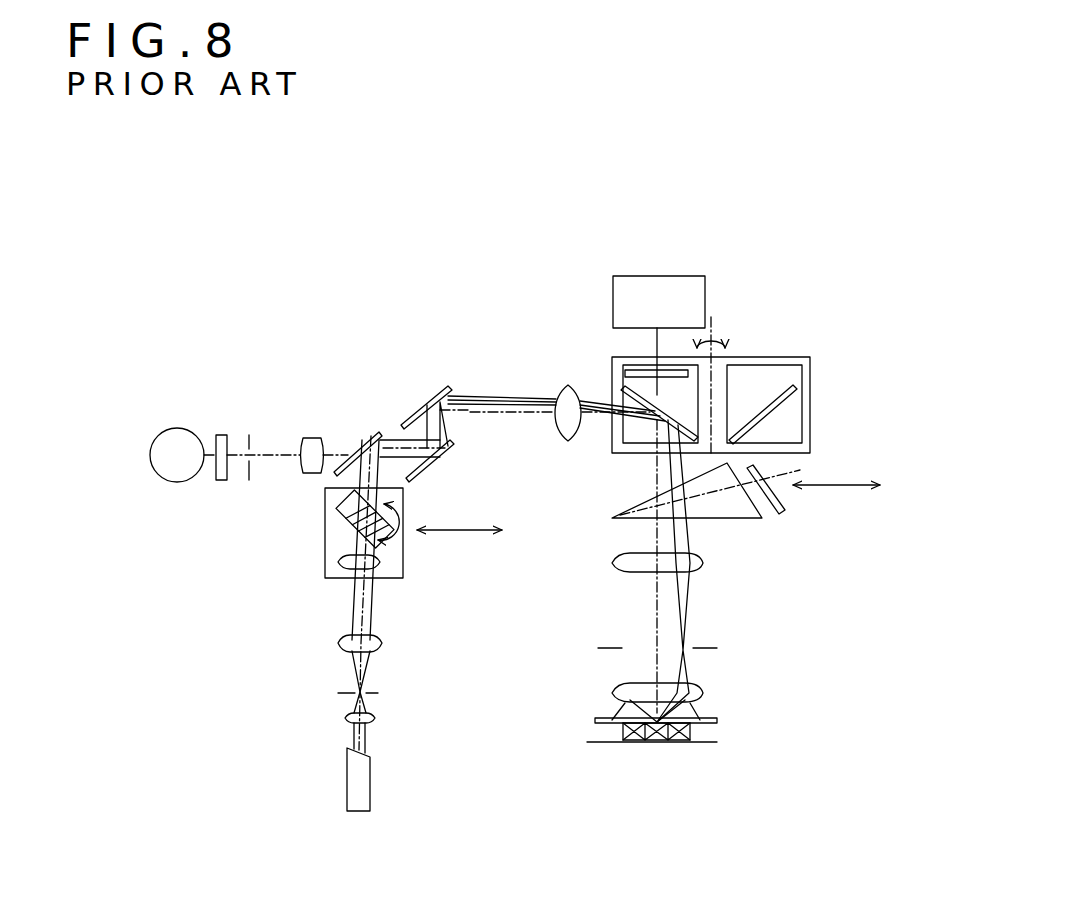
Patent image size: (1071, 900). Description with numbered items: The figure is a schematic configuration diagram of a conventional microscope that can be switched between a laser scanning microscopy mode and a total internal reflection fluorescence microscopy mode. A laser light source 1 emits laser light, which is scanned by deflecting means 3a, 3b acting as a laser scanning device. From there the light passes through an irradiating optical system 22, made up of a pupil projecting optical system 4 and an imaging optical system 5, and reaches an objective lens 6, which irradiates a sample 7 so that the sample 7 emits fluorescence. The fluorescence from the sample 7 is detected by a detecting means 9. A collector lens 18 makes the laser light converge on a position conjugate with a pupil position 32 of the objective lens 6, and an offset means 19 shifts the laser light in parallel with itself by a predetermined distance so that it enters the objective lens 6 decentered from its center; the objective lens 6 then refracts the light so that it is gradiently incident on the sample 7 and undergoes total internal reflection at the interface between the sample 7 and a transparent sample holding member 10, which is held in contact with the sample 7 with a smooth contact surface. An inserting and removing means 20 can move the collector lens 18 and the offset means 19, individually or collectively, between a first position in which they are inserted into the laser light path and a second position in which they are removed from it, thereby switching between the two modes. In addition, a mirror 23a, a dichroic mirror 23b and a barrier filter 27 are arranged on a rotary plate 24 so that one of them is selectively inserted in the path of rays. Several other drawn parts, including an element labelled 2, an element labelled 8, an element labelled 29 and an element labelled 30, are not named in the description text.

The laser light source 1 is at (372, 793).
The mirror 2 is at (366, 431).
The deflecting means 3a is at (424, 476).
The deflecting means 3b is at (436, 387).
The pupil projecting optical system 4 is at (565, 390).
The imaging optical system 5 is at (700, 566).
The objective lens 6 is at (702, 694).
The sample 7 is at (700, 733).
The slit plate 8 is at (251, 437).
The detecting means 9 is at (176, 428).
The transparent sample holding member 10 is at (718, 722).
The collector lens 18 is at (340, 565).
The offset means 19 is at (333, 518).
The inserting and removing means 20 is at (405, 566).
The irradiating optical system 22 is at (626, 603).
The mirror 23a is at (785, 406).
The dichroic mirror 23b is at (625, 392).
The rotary plate 24 is at (810, 378).
The barrier filter 27 is at (640, 368).
The prism 29 is at (735, 520).
The drive motor 30 is at (705, 303).
The pupil position 32 is at (705, 647).